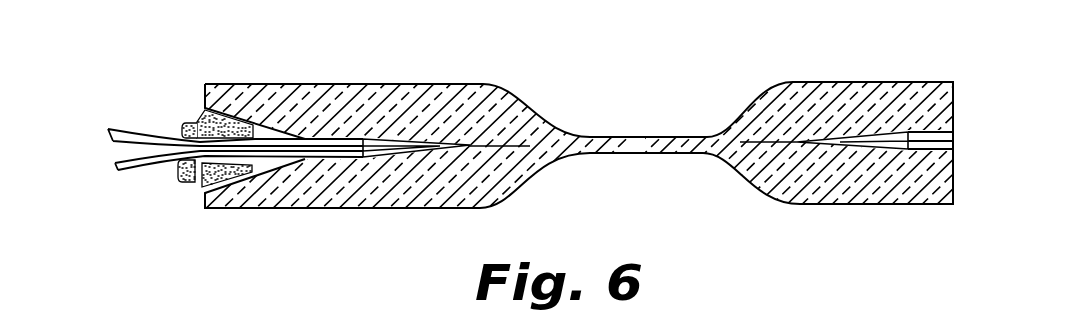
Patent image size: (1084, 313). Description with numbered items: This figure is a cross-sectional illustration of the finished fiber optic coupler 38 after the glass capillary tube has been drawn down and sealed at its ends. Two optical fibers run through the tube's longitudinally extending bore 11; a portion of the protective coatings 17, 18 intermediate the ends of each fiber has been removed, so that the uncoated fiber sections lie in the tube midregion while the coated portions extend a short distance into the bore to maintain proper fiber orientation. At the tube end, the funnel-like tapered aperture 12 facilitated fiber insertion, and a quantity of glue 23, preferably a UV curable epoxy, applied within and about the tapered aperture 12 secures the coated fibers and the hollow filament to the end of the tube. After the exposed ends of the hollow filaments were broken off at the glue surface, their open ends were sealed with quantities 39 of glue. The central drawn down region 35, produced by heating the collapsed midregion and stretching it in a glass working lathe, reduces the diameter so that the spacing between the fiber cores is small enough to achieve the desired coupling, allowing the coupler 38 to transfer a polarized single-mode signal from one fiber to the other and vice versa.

The bore 11 is at (403, 152).
The tapered aperture 12 is at (203, 118).
The protective coating 17 is at (133, 128).
The protective coating 18 is at (128, 176).
The glue 23 is at (199, 193).
The drawn down region 35 is at (636, 137).
The fiber optic coupler 38 is at (480, 81).
The quantity of glue 39 is at (180, 181).